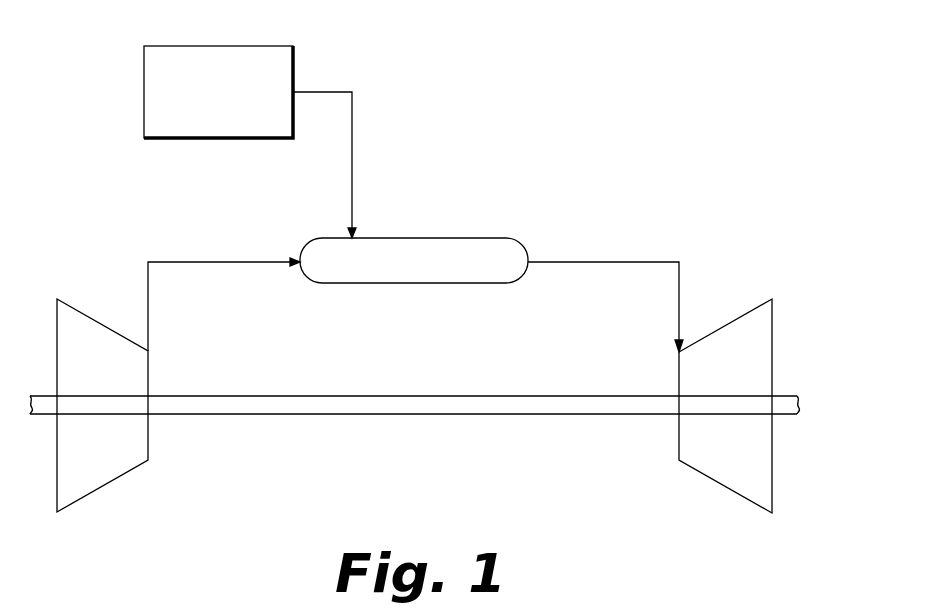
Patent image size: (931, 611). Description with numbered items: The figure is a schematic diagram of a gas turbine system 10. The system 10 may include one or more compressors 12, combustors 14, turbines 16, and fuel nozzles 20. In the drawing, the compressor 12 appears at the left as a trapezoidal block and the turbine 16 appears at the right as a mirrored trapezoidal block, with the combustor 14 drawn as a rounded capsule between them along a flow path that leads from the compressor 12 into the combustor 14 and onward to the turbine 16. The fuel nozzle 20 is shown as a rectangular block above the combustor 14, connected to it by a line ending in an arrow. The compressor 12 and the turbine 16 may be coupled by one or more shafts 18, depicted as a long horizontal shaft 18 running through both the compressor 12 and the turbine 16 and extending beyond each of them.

The gas turbine system 10 is at (670, 172).
The compressor 12 is at (103, 487).
The combustor 14 is at (413, 238).
The turbine 16 is at (773, 320).
The shaft 18 is at (415, 414).
The fuel nozzle 20 is at (295, 46).